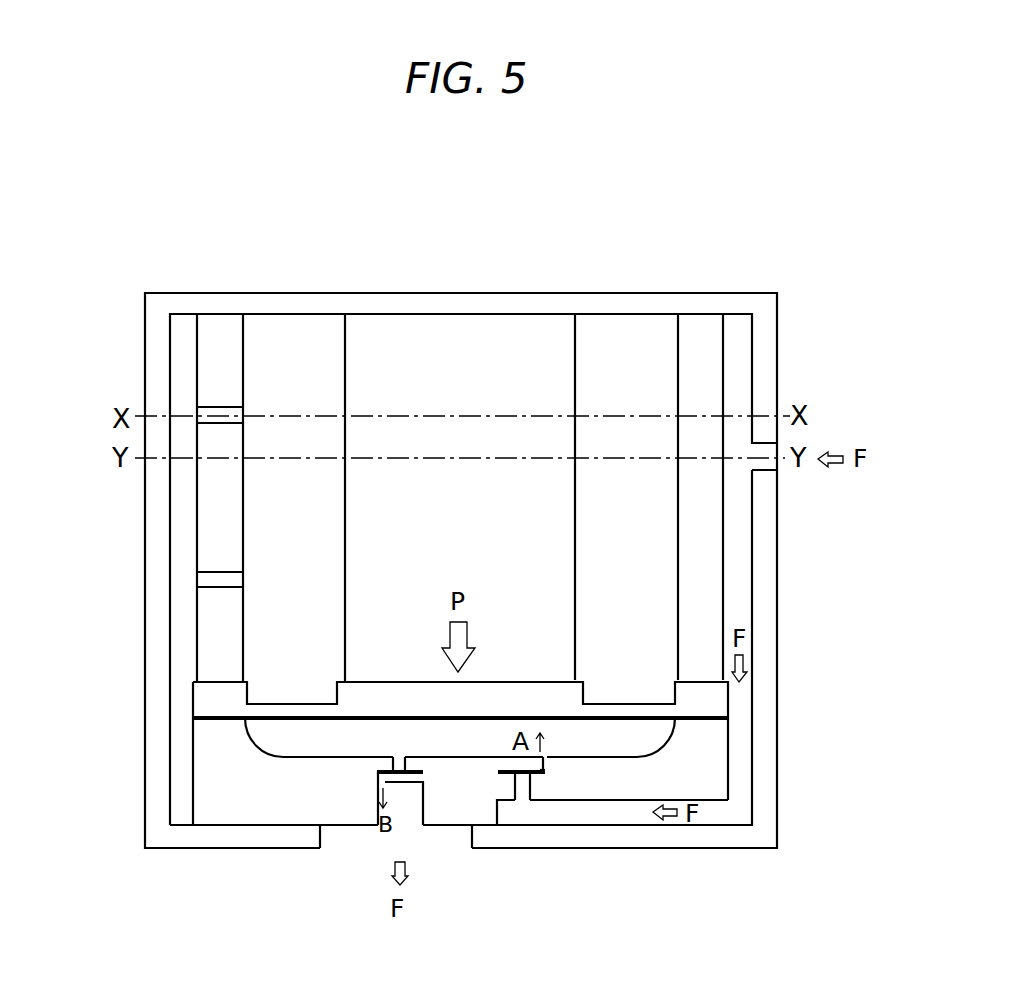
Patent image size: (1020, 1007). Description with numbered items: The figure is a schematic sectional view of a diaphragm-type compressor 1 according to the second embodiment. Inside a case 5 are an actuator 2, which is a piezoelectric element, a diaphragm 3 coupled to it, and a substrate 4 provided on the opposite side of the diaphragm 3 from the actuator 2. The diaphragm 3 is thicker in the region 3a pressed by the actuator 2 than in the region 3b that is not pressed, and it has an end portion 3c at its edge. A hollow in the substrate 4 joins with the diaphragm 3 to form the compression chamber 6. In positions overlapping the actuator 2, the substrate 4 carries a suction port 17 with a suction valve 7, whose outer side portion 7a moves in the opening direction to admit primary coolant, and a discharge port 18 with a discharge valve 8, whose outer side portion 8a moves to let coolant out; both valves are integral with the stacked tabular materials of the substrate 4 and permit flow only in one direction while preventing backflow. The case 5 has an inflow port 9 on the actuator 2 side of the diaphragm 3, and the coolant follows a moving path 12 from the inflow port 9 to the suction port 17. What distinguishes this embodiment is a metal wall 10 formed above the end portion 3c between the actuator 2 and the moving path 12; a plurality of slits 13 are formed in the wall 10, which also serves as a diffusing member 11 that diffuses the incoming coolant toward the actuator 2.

The diaphragm-type compressor 1 is at (747, 221).
The actuator 2 is at (440, 370).
The diaphragm 3 is at (213, 697).
The region pressed by the actuator 3a is at (540, 693).
The region not pressed by the actuator 3b is at (650, 703).
The end portion of the diaphragm 3c is at (220, 681).
The substrate 4 is at (222, 783).
The case 5 is at (247, 303).
The compression chamber 6 is at (560, 770).
The suction valve 7 is at (530, 774).
The outer side portion of the suction valve 7a is at (570, 748).
The discharge valve 8 is at (378, 783).
The outer side portion of the discharge valve 8a is at (378, 777).
The inflow port 9 is at (765, 452).
The wall 10 is at (212, 378).
The diffusing member 11 is at (700, 370).
The moving path 12 is at (735, 553).
The slit 13 is at (207, 415).
The suction port 17 is at (515, 790).
The discharge port 18 is at (416, 782).